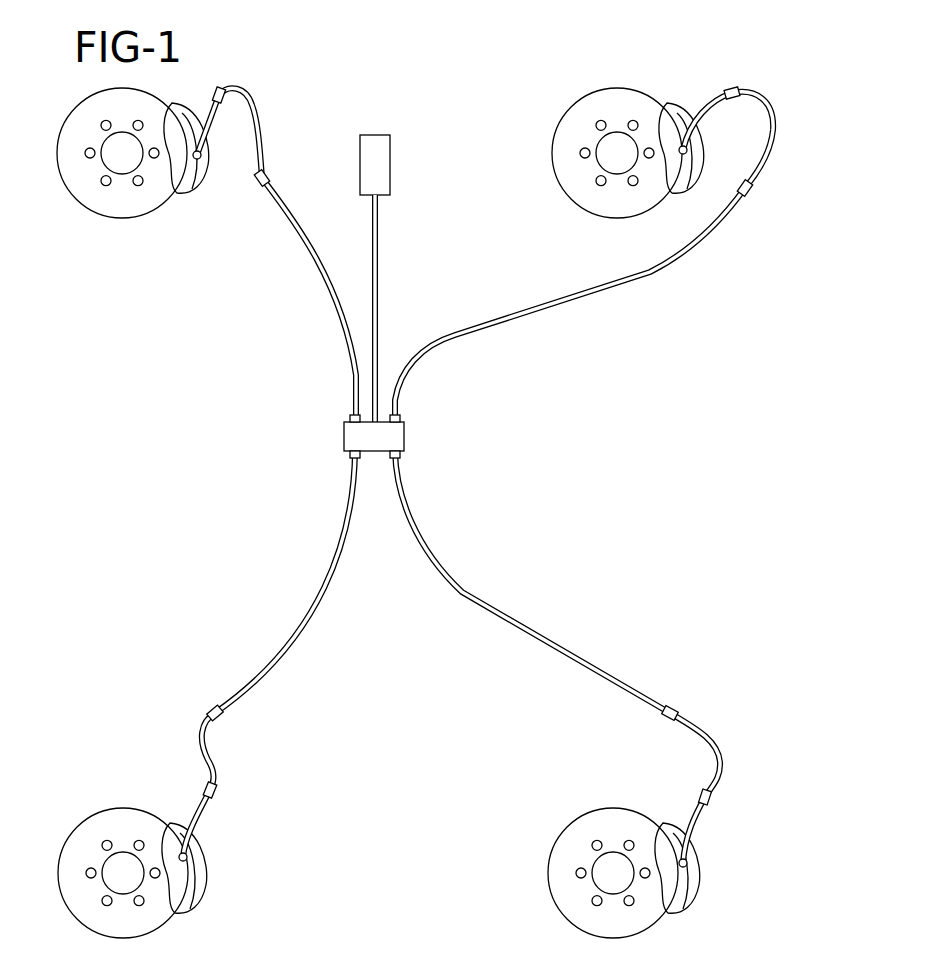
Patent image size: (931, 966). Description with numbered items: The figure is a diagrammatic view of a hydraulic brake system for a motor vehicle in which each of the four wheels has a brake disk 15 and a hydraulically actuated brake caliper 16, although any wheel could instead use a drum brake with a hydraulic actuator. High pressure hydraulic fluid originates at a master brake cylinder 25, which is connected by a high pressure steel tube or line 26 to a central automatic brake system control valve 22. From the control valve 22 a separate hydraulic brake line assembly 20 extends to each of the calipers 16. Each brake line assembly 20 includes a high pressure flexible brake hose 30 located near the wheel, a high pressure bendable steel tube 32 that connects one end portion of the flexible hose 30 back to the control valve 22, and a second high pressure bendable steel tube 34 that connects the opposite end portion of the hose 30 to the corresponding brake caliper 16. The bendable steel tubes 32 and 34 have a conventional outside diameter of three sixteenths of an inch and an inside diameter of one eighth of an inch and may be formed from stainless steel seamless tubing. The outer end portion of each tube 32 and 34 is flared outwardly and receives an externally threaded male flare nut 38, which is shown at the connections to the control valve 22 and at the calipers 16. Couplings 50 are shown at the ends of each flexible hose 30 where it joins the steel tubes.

The brake disk 15 is at (122, 208).
The brake caliper 16 is at (183, 188).
The brake line assembly 20 is at (469, 445).
The control valve 22 is at (405, 436).
The master brake cylinder 25 is at (385, 133).
The high pressure steel tube 26 is at (378, 265).
The flexible brake hose 30 is at (257, 110).
The bendable steel tube 32 is at (342, 330).
The bendable steel tube 34 is at (208, 103).
The male flare nut 38 is at (200, 157).
The hose coupling / clamp 50 is at (264, 175).